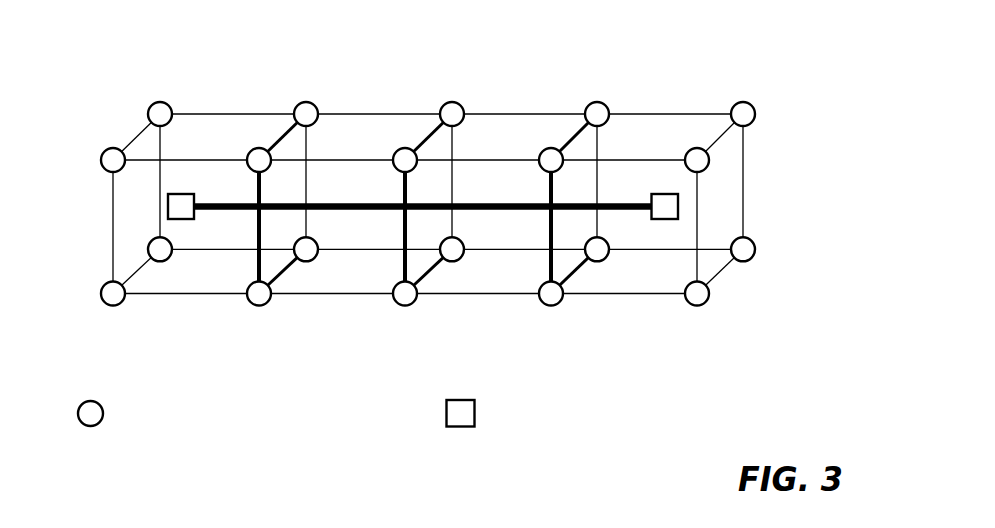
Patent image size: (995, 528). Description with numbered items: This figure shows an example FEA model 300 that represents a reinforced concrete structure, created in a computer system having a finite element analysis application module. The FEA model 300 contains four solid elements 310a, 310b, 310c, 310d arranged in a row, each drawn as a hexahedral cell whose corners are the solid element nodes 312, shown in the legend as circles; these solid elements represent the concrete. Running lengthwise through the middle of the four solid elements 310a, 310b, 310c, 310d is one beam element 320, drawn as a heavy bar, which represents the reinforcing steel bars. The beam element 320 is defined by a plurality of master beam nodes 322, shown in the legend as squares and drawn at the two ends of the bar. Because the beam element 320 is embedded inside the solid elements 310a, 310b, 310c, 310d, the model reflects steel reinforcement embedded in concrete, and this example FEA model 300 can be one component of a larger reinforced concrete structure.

The FEA model 300 is at (438, 205).
The solid element 310a is at (248, 152).
The solid element 310b is at (392, 152).
The solid element 310c is at (537, 152).
The solid element 310d is at (682, 152).
The solid element node 312 is at (221, 414).
The beam element 320 is at (516, 212).
The master beam node 322 is at (590, 414).